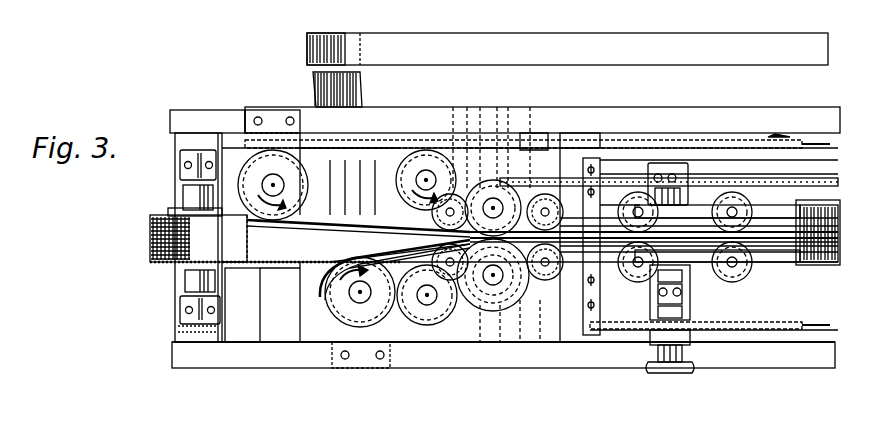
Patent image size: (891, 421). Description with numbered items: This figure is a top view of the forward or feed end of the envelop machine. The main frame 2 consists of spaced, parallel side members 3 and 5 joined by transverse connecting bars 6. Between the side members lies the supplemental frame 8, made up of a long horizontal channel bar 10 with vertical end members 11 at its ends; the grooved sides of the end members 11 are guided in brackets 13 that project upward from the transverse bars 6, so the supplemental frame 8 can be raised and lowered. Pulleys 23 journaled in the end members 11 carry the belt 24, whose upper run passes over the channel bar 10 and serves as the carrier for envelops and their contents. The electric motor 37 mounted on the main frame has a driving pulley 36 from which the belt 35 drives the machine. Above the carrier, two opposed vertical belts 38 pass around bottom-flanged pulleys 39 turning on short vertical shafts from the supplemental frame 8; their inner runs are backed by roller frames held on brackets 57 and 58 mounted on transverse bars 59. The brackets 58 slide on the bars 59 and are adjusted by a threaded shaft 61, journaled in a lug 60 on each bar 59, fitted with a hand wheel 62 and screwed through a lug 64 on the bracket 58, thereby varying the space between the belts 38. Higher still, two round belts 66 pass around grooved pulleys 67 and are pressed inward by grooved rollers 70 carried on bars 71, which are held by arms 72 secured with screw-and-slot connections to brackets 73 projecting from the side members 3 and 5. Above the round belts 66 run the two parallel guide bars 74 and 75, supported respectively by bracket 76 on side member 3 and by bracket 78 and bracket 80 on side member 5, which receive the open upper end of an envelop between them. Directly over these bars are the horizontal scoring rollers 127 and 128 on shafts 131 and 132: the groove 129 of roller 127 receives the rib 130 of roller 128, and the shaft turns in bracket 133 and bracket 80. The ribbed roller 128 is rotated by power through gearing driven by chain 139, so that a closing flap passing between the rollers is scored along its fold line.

The main frame 2 is at (247, 358).
The side member 3 is at (182, 110).
The side member 5 is at (190, 358).
The transverse connecting bar 6 is at (188, 333).
The supplemental frame 8 is at (238, 265).
The channel bar 10 is at (838, 240).
The end member 11 is at (188, 195).
The bracket 13 is at (180, 170).
The pulley 23 is at (168, 212).
The belt 24 is at (150, 238).
The belt 35 is at (592, 40).
The driving pulley 36 is at (322, 33).
The electric motor 37 is at (358, 88).
The vertical belt 38 is at (820, 206).
The pulley 39 is at (420, 170).
The bracket 57 is at (670, 188).
The bracket 58 is at (682, 278).
The bar 59 is at (657, 163).
The lug 60 is at (652, 345).
The shaft 61 is at (684, 296).
The hand wheel 62 is at (662, 368).
The lug 64 is at (684, 312).
The belt 66 is at (358, 262).
The grooved pulley 67 is at (246, 172).
The grooved roller 70 is at (736, 193).
The bar 71 is at (690, 205).
The arm 72 is at (586, 136).
The bracket 73 is at (595, 173).
The bar 74 is at (255, 224).
The bar 75 is at (325, 264).
The bracket 76 is at (294, 101).
The bracket 78 is at (450, 282).
The bracket 80 is at (503, 343).
The scoring roller 127 is at (508, 196).
The scoring roller 128 is at (470, 300).
The peripheral groove 129 is at (480, 160).
The peripheral rib 130 is at (522, 302).
The shaft 131 is at (536, 186).
The shaft 132 is at (503, 276).
The bracket 133 is at (528, 138).
The chain 139 is at (795, 178).